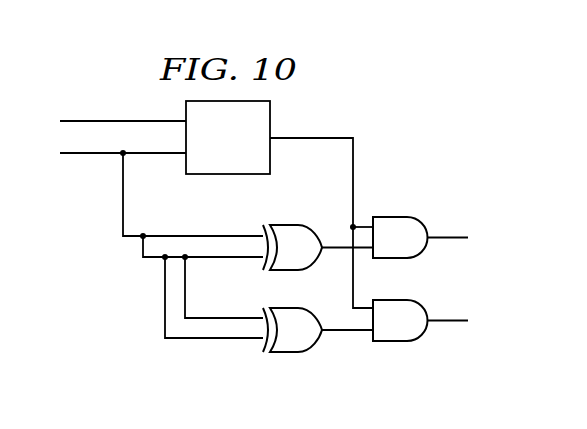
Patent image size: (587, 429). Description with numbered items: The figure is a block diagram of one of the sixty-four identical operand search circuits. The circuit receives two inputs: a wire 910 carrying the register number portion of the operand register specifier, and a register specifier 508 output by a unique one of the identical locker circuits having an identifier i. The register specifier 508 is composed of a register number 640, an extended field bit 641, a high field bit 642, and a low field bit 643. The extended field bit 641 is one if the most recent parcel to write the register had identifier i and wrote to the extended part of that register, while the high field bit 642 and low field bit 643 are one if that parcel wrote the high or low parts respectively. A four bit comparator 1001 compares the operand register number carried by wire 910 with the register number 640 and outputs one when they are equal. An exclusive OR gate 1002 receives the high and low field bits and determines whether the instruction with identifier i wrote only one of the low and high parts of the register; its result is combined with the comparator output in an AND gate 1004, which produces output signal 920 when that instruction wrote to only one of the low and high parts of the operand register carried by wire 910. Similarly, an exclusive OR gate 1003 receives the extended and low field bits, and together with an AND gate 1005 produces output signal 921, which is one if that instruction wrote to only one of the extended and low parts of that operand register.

The wire 910 is at (98, 121).
The register specifier 508 is at (98, 153).
The register number 640 is at (165, 153).
The low field bit 643 is at (227, 236).
The high field bit 642 is at (228, 257).
The extended field bit 641 is at (228, 338).
The four bit comparator 1001 is at (253, 147).
The exclusive OR gate 1002 is at (317, 208).
The exclusive OR gate 1003 is at (302, 352).
The AND gate 1004 is at (395, 217).
The AND gate 1005 is at (393, 341).
The output signal 920 is at (447, 237).
The output signal 921 is at (447, 321).